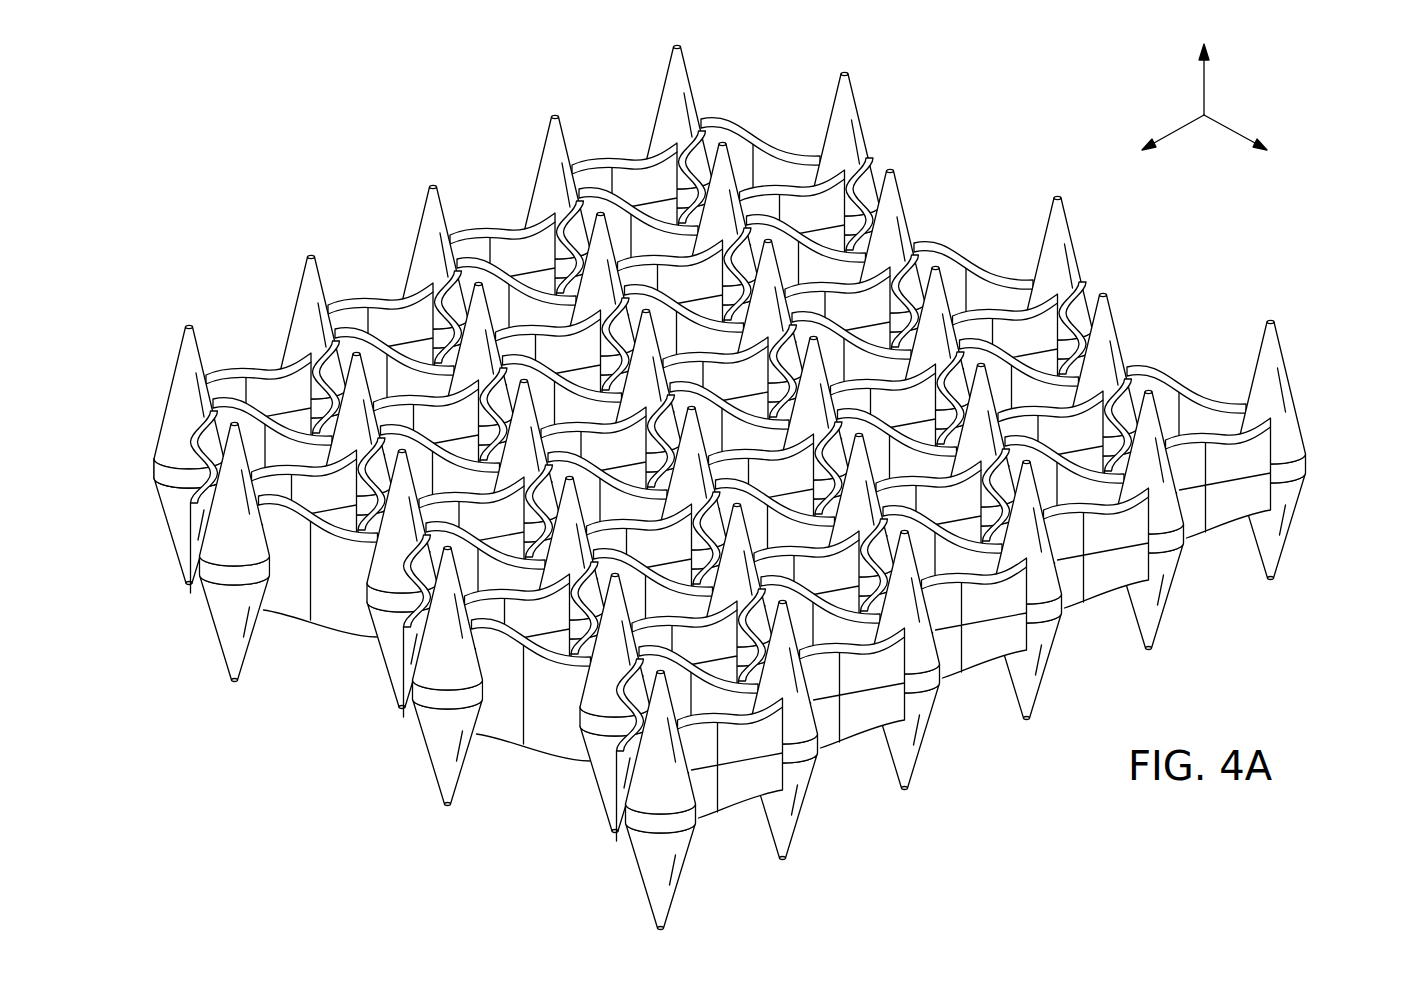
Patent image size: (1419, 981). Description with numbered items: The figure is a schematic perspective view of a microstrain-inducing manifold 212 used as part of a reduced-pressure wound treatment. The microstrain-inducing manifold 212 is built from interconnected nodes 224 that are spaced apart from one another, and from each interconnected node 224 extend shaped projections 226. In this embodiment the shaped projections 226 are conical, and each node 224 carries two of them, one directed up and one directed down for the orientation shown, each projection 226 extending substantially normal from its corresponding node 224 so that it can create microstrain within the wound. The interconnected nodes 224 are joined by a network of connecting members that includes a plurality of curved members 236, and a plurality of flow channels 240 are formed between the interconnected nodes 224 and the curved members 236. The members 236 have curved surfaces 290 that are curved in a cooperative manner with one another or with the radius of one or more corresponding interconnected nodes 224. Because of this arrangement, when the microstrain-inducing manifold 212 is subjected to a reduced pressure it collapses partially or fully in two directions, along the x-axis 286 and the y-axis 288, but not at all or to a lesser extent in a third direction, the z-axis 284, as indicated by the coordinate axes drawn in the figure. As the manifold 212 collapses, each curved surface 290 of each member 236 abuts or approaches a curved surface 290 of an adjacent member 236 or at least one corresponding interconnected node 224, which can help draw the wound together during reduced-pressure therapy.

The microstrain-inducing manifold 212 is at (733, 487).
The interconnected node 224 is at (154, 467).
The shaped projection 226 is at (661, 96).
The curved member 236 is at (343, 571).
The flow channel 240 is at (417, 341).
The z-axis 284 is at (1206, 74).
The x-axis 286 is at (1180, 128).
The y-axis 288 is at (1227, 131).
The curved surface 290 is at (862, 735).